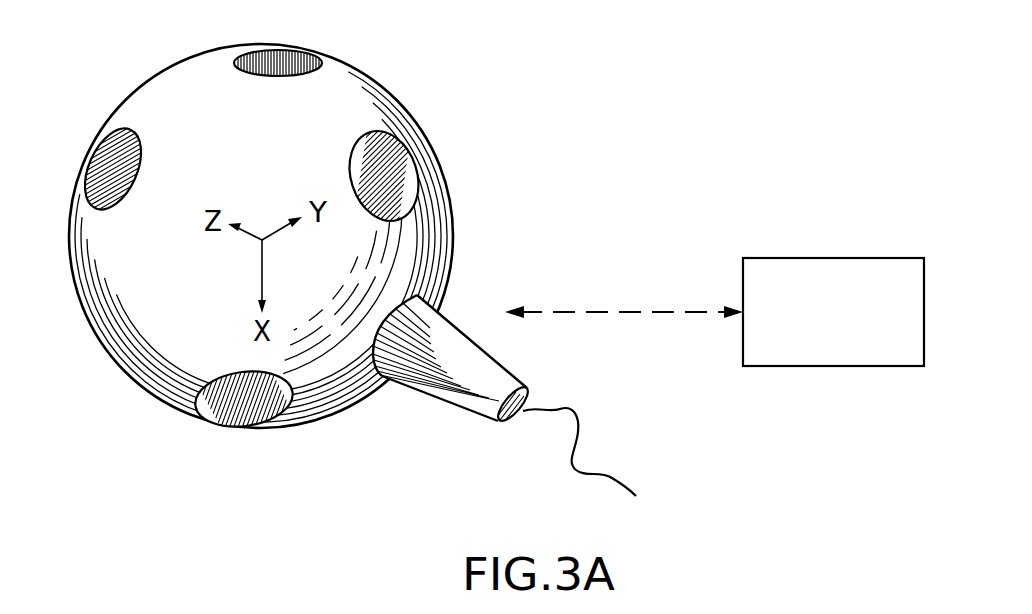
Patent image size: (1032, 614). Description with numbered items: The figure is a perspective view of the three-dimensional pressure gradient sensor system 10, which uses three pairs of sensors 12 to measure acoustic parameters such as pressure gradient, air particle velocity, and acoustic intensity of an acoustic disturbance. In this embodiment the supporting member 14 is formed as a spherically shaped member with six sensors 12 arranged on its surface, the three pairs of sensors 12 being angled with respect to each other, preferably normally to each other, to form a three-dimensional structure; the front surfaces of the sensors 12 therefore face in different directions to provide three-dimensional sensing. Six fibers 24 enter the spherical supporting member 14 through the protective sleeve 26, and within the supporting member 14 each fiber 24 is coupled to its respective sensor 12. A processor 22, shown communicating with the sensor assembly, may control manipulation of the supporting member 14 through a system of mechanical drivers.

The system 10 is at (704, 150).
The sensors 12 is at (282, 52).
The supporting member 14 is at (420, 85).
The processor 22 is at (877, 258).
The fibers 24 is at (576, 418).
The protective sleeve 26 is at (438, 398).